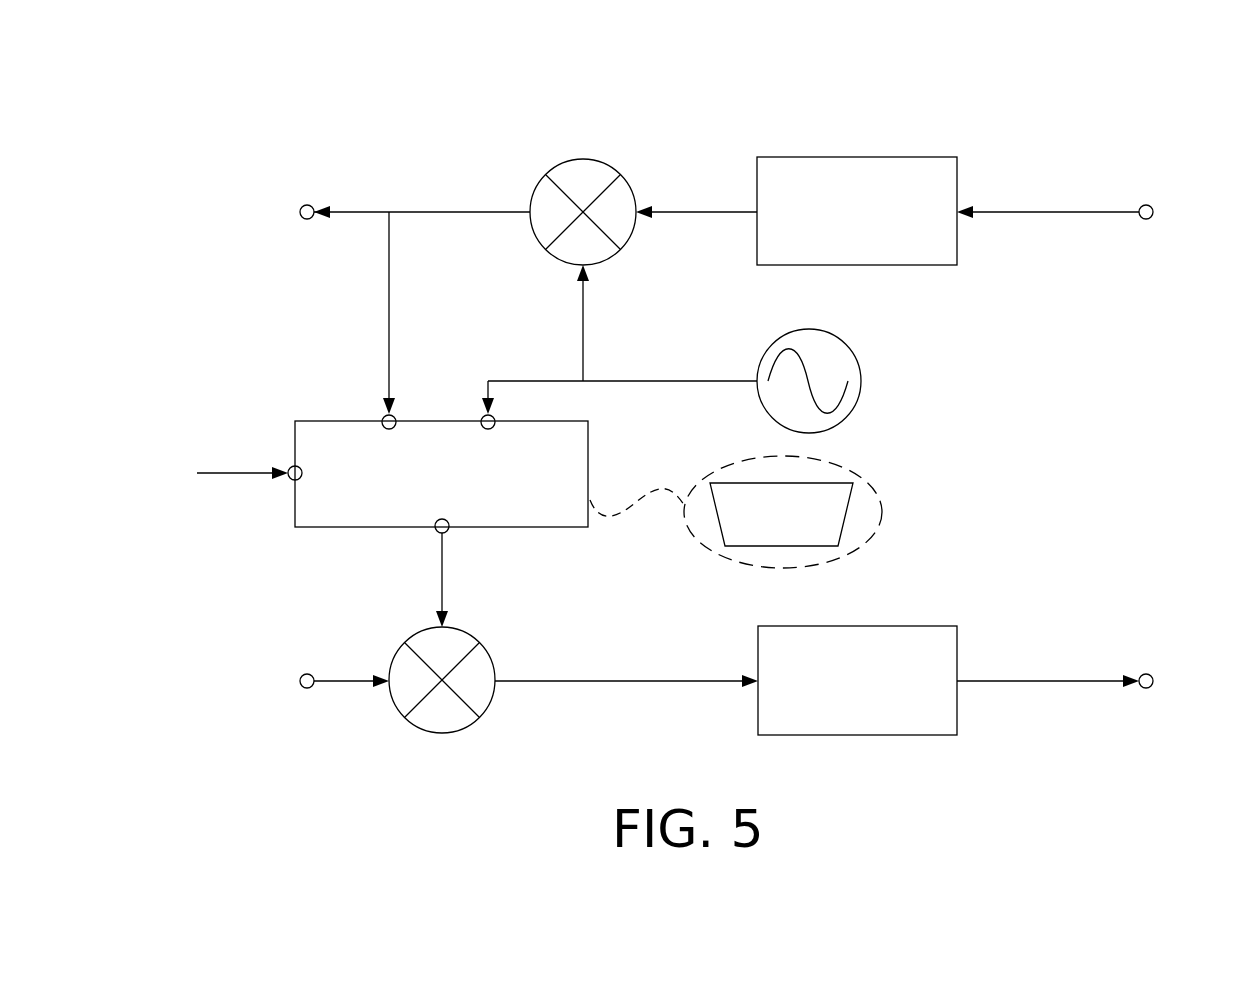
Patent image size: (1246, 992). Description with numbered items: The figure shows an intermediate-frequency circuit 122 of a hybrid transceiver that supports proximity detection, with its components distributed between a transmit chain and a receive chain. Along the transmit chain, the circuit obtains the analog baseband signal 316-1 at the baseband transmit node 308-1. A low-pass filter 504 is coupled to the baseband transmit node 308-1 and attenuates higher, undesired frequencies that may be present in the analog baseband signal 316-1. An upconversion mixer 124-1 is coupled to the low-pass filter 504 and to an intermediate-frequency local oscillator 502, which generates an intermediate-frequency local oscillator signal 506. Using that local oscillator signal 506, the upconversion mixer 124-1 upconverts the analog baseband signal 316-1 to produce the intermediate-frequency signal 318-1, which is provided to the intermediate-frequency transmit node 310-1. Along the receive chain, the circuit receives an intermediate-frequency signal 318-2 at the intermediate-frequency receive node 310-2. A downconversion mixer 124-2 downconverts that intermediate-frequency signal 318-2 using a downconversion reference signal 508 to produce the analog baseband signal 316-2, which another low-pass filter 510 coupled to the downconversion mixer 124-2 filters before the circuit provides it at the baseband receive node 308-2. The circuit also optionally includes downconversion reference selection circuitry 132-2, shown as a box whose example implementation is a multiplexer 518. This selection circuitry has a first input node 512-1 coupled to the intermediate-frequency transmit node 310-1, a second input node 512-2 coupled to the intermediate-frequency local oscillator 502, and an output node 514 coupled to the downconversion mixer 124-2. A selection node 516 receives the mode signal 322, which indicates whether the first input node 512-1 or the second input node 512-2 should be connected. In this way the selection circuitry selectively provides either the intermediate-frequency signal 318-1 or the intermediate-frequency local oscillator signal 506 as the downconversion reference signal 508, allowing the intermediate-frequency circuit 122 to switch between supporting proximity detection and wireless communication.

The intermediate-frequency circuit 122 is at (160, 106).
The intermediate-frequency transmit node 310-1 is at (305, 204).
The intermediate-frequency signal 318-1 is at (482, 211).
The first input node 512-1 is at (381, 414).
The upconversion mixer 124-1 is at (583, 158).
The low-pass filter 504 is at (838, 231).
The analog baseband signal 316-1 is at (1040, 211).
The baseband transmit node 308-1 is at (1143, 220).
The intermediate-frequency local oscillator 502 is at (862, 381).
The intermediate-frequency local oscillator signal 506 is at (625, 380).
The second input node 512-2 is at (481, 414).
The downconversion reference selection circuitry 132-2 is at (413, 510).
The mode signal 322 is at (252, 471).
The selection node 516 is at (293, 481).
The multiplexer 518 is at (764, 537).
The output node 514 is at (436, 540).
The downconversion reference signal 508 is at (442, 592).
The intermediate-frequency receive node 310-2 is at (305, 673).
The intermediate-frequency signal 318-2 is at (337, 681).
The downconversion mixer 124-2 is at (490, 707).
The low-pass filter 510 is at (838, 702).
The analog baseband signal 316-2 is at (1058, 681).
The baseband receive node 308-2 is at (1143, 690).